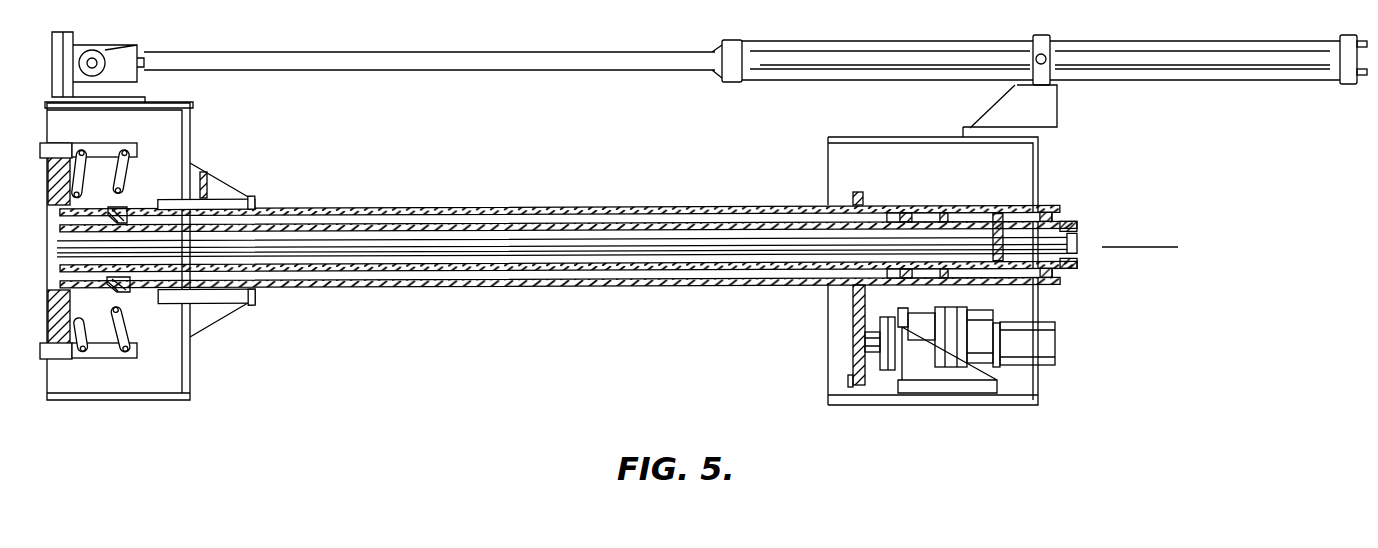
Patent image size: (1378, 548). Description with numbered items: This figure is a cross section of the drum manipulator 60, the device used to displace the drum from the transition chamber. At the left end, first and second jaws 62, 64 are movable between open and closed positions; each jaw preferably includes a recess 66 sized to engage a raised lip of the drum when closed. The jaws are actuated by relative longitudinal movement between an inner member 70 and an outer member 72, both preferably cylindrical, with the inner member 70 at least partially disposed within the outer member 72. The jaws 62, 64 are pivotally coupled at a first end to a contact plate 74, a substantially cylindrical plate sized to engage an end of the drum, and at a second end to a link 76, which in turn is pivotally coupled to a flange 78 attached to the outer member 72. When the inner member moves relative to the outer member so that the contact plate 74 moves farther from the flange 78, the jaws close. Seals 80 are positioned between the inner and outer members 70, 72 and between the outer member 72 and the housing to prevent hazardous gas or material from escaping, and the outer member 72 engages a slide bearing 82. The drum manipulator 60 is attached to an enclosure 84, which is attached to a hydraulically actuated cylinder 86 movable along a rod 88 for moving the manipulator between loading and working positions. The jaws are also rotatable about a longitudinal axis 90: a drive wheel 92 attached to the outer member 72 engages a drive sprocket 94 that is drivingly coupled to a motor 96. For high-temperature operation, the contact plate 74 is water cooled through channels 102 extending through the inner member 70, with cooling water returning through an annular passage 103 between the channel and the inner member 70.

The drum manipulator 60 is at (427, 350).
The first jaw 62 is at (106, 150).
The second jaw 64 is at (106, 353).
The recess 66 is at (44, 156).
The inner member 70 is at (375, 212).
The outer member 72 is at (472, 208).
The contact plate 74 is at (48, 202).
The link 76 is at (120, 180).
The flange 78 is at (127, 305).
The seals 80 is at (255, 198).
The slide bearing 82 is at (212, 197).
The enclosure 84 is at (1040, 160).
The hydraulically actuated cylinder 86 is at (878, 41).
The rod 88 is at (566, 50).
The longitudinal axis 90 is at (1138, 247).
The drive wheel 92 is at (848, 292).
The drive sprocket 94 is at (850, 378).
The motor 96 is at (1028, 345).
The channels 102 is at (522, 238).
The annular passage 103 is at (650, 258).